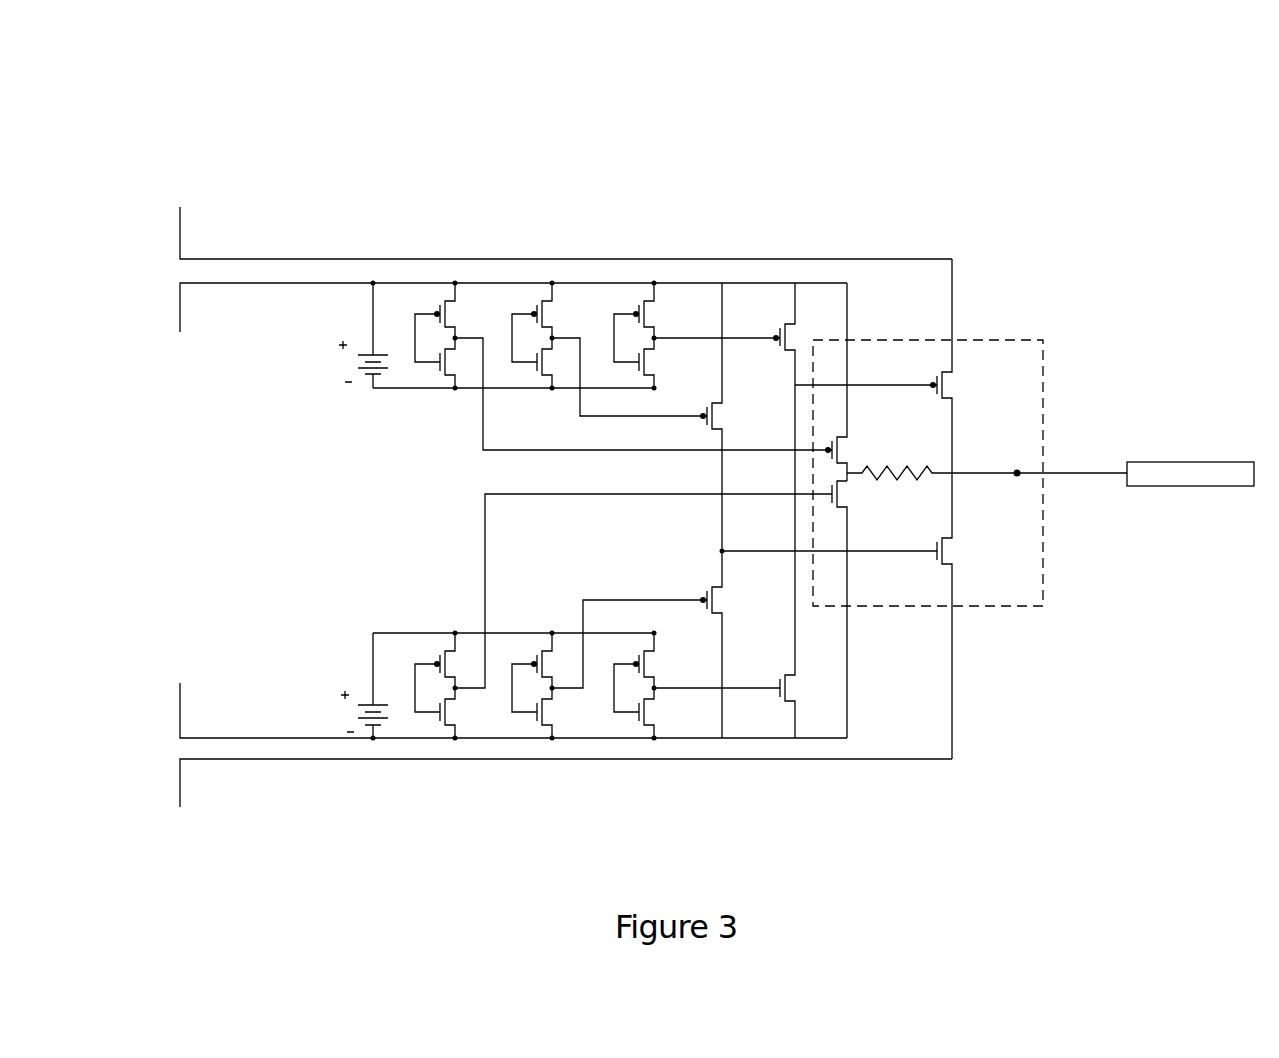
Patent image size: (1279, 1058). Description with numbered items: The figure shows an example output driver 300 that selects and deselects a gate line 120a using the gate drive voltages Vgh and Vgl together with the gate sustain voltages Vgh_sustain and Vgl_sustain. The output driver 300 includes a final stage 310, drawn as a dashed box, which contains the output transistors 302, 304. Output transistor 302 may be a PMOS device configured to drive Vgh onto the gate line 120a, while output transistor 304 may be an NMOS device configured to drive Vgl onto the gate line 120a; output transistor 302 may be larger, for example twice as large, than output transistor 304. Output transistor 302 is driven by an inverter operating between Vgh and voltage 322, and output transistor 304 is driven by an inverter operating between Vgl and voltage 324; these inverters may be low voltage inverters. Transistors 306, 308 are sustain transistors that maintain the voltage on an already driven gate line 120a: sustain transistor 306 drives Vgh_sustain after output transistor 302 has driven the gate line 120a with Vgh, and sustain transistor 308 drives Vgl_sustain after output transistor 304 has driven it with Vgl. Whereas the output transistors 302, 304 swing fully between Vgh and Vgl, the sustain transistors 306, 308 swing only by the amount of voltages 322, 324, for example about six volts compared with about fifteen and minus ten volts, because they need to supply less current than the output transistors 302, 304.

The output driver 300 is at (160, 75).
The output transistor 302 is at (952, 385).
The output transistor 304 is at (952, 549).
The sustain transistor 306 is at (852, 447).
The sustain transistor 308 is at (848, 494).
The final stage 310 is at (1025, 358).
The voltage 322 is at (335, 335).
The voltage 324 is at (335, 685).
The gate line 120a is at (1165, 476).